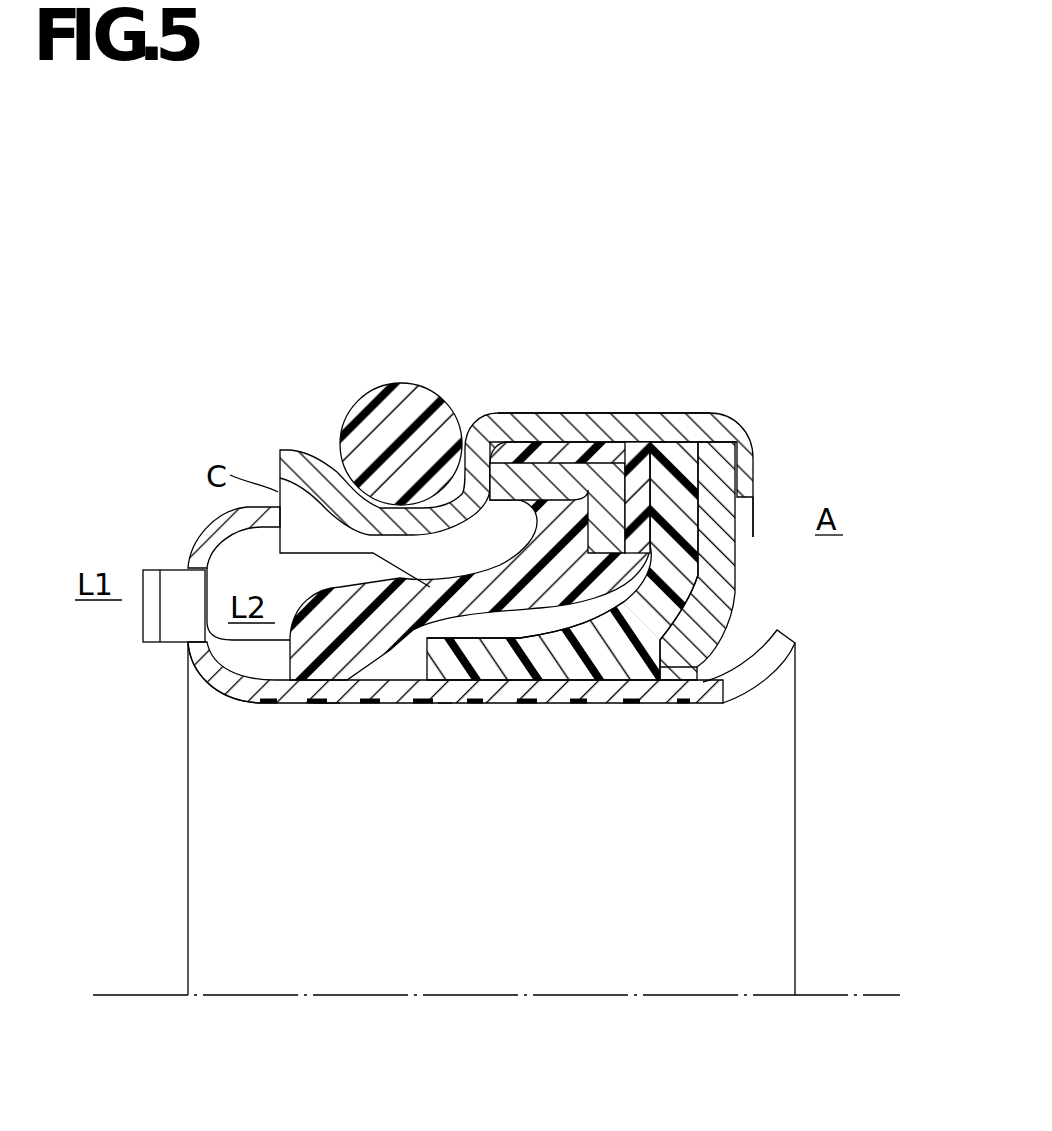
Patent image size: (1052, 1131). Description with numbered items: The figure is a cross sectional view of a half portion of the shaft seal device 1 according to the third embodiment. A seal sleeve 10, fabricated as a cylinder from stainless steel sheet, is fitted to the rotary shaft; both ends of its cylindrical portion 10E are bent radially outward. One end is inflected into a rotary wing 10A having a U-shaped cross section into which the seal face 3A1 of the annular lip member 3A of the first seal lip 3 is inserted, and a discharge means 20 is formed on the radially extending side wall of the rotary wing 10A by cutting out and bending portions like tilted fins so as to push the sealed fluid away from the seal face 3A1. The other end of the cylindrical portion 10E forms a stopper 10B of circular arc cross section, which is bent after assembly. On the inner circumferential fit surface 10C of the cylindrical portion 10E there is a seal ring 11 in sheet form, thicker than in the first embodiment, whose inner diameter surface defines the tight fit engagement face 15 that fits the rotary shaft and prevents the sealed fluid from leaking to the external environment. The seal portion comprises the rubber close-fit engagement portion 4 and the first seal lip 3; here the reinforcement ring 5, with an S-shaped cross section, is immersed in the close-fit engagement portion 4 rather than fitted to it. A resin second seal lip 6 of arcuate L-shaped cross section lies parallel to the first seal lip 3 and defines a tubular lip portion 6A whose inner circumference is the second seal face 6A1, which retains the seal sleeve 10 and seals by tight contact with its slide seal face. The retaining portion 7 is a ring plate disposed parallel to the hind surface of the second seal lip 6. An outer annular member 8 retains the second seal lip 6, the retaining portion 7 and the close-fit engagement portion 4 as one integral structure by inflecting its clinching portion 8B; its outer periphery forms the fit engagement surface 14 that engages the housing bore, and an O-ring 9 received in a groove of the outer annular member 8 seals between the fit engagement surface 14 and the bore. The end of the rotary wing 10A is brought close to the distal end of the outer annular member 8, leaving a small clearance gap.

The shaft seal device 1 is at (707, 403).
The first seal lip 3 is at (427, 587).
The annular lip member 3A is at (320, 633).
The seal face 3A1 is at (320, 704).
The close-fit engagement portion 4 is at (627, 453).
The reinforcement ring 5 is at (548, 467).
The second seal lip 6 is at (682, 535).
The tubular lip portion 6A is at (537, 657).
The second seal face 6A1 is at (503, 683).
The retaining portion 7 is at (723, 598).
The outer annular member 8 is at (583, 413).
The clinching portion 8B is at (335, 473).
The O-ring 9 is at (403, 407).
The seal sleeve 10 is at (547, 690).
The rotary wing 10A is at (188, 658).
The stopper 10B is at (780, 663).
The inner circumferential fit surface 10C is at (593, 705).
The cylindrical portion 10E is at (387, 693).
The seal ring 11 is at (333, 704).
The fit engagement surface 14 is at (513, 413).
The tight fit engagement face 15 is at (445, 704).
The discharge means 20 is at (175, 610).